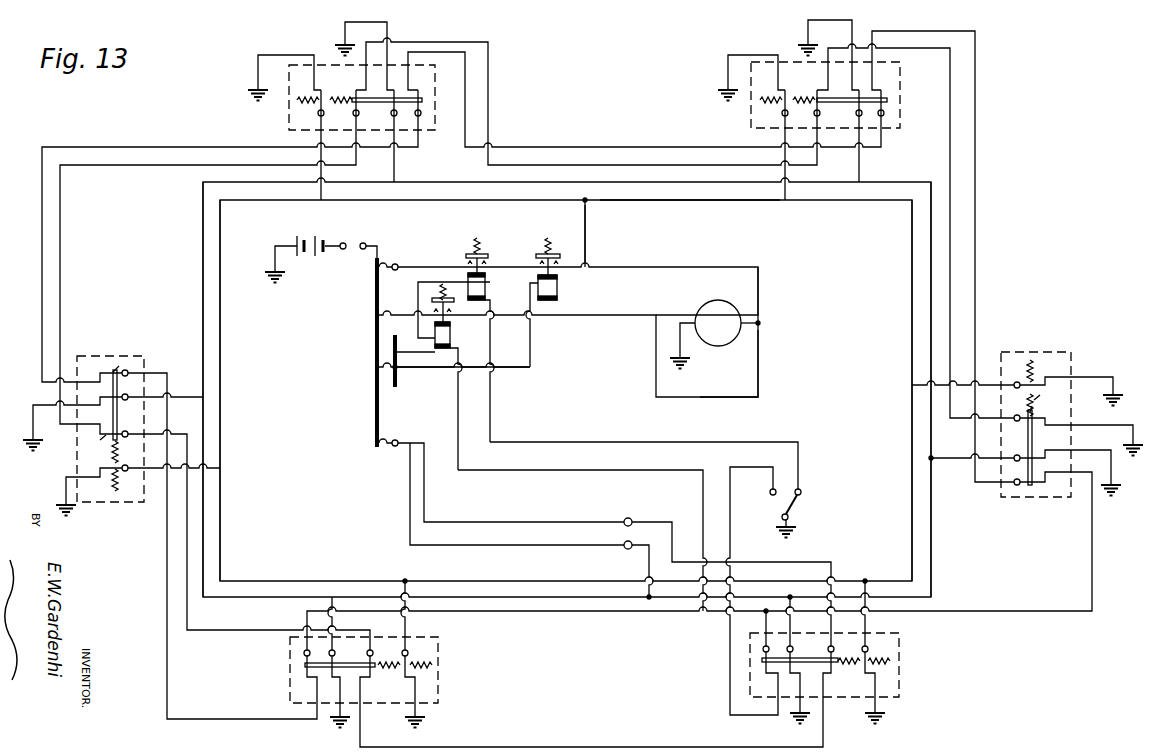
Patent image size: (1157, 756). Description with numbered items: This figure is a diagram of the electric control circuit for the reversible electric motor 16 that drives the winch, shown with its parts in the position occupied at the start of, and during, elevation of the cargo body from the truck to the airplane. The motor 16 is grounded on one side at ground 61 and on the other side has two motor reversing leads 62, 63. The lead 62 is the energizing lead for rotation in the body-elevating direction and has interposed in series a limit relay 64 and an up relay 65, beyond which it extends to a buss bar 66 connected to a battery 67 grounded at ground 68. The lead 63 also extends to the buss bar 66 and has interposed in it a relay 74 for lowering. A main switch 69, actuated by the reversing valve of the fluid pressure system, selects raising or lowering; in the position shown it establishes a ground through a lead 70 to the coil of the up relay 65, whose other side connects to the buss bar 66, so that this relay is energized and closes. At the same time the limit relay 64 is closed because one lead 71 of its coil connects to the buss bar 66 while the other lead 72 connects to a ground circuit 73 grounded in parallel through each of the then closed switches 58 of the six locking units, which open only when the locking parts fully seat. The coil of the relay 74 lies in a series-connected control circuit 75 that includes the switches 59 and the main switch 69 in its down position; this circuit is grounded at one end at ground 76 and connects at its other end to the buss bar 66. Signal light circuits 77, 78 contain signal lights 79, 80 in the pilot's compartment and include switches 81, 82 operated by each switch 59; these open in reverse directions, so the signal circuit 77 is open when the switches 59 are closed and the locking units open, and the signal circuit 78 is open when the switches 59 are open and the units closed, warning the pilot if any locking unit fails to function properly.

The reversible electric motor 16 is at (722, 302).
The switch 58 is at (318, 100).
The switch 59 is at (424, 95).
The ground 61 is at (684, 353).
The motor reversing lead 62 is at (683, 267).
The motor reversing lead 63 is at (760, 351).
The limit relay 64 is at (548, 303).
The up relay 65 is at (481, 262).
The buss bar 66 is at (376, 330).
The battery 67 is at (318, 244).
The ground 68 is at (274, 283).
The main switch 69 is at (797, 503).
The lead 70 is at (574, 440).
The lead 71 is at (506, 370).
The lead 72 is at (588, 237).
The ground circuit 73 is at (673, 203).
The relay 74 is at (445, 345).
The control circuit 75 is at (575, 472).
The ground 76 is at (797, 534).
The signal light circuit 77 is at (188, 537).
The signal light circuit 78 is at (206, 493).
The signal light 79 is at (625, 549).
The signal light 80 is at (631, 518).
The switch 81 is at (113, 440).
The switch 82 is at (119, 372).